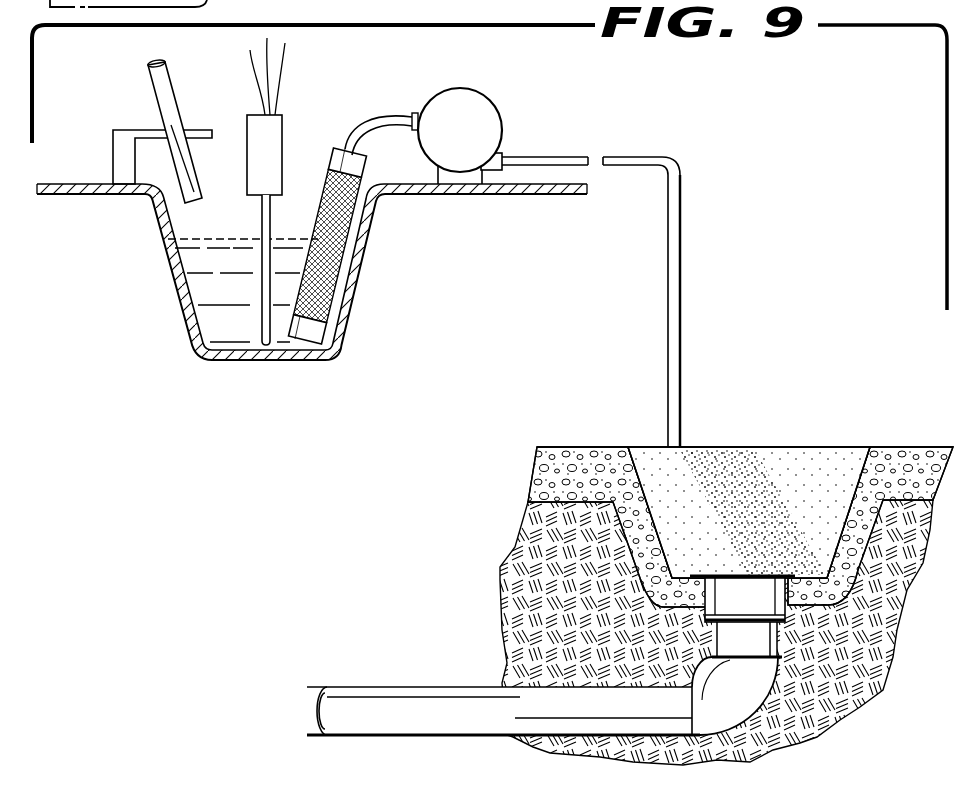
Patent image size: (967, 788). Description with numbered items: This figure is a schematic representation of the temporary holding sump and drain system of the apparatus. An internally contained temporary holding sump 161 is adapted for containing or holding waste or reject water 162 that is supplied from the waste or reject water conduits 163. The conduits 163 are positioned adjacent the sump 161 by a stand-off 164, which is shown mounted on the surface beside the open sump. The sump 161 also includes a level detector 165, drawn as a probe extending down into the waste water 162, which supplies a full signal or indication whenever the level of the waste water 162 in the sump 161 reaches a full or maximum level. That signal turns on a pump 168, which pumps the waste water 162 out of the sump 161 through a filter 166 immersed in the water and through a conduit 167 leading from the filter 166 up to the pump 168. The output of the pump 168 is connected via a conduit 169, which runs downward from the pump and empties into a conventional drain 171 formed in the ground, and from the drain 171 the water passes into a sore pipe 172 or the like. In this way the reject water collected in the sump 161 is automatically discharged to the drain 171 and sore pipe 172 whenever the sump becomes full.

The temporary holding sump 161 is at (379, 261).
The waste or reject water 162 is at (200, 295).
The waste or reject water conduits 163 is at (178, 100).
The stand-off 164 is at (112, 150).
The level detector 165 is at (304, 135).
The filter 166 is at (330, 296).
The conduit 167 is at (390, 120).
The pump 168 is at (498, 108).
The conduit 169 is at (668, 262).
The drain 171 is at (798, 460).
The sore pipe 172 is at (433, 695).